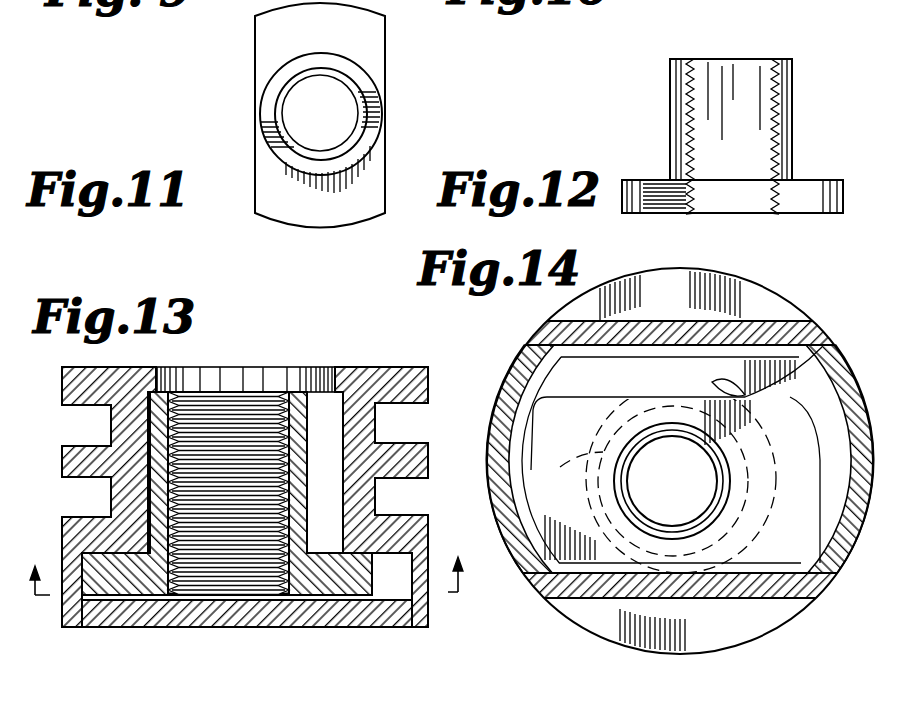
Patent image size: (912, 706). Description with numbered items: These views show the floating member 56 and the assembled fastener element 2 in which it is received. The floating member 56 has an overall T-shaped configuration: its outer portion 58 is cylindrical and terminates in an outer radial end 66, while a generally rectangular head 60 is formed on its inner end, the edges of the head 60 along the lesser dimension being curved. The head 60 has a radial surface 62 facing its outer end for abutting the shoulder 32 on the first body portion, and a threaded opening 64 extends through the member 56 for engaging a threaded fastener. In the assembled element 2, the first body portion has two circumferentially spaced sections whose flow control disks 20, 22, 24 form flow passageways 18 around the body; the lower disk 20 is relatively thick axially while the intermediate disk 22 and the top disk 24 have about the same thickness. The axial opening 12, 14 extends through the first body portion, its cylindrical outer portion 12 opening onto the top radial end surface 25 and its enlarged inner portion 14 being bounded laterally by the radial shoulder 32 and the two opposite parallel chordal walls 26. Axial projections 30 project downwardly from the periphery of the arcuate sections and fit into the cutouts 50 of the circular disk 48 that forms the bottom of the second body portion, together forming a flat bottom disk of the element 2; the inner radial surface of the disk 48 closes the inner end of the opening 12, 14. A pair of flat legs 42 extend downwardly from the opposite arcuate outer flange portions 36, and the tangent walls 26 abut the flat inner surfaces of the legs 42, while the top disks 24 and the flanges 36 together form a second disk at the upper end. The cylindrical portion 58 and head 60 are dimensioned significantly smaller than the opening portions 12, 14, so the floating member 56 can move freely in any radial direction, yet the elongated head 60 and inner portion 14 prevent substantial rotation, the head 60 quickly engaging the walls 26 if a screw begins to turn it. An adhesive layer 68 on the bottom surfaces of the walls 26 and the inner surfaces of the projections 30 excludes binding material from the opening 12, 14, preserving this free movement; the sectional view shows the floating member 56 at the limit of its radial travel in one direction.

In FIG. 13, the fastener element 2 is at (320, 342).
In FIG. 14, the fastener element 2 is at (774, 288).
In FIG. 13, the outer cylindrical portion of the axial opening 12 is at (322, 405).
In FIG. 14, the outer cylindrical portion of the axial opening 12 is at (820, 350).
In FIG. 13, the inner portion of the axial opening 14 is at (447, 547).
In FIG. 14, the inner portion of the axial opening 14 is at (830, 392).
In FIG. 13, the flow passageways 18 is at (395, 424).
In FIG. 13, the lower flow control disk 20 is at (62, 536).
In FIG. 13, the intermediate flow control disk 22 is at (428, 452).
In FIG. 13, the top flow control disk 24 is at (428, 370).
In FIG. 13, the top radial end surface 25 is at (125, 367).
In FIG. 14, the chordal walls 26 is at (592, 580).
In FIG. 13, the axial projections 30 is at (430, 612).
In FIG. 14, the axial projections 30 is at (512, 568).
In FIG. 13, the radial shoulder 32 is at (115, 556).
In FIG. 14, the radial shoulder 32 is at (610, 390).
In FIG. 14, the outer flange portions 36 is at (662, 292).
In FIG. 14, the flat legs 42 is at (765, 321).
In FIG. 13, the circular disk 48 is at (131, 630).
In FIG. 13, the circumferential cutout 50 is at (422, 622).
In FIG. 11, the floating member 56 is at (252, 91).
In FIG. 12, the floating member 56 is at (650, 79).
In FIG. 11, the outer cylindrical portion of the floating member 58 is at (265, 155).
In FIG. 12, the outer cylindrical portion of the floating member 58 is at (670, 104).
In FIG. 13, the outer cylindrical portion of the floating member 58 is at (288, 400).
In FIG. 14, the outer cylindrical portion of the floating member 58 is at (560, 546).
In FIG. 11, the head 60 is at (385, 45).
In FIG. 12, the head 60 is at (622, 192).
In FIG. 13, the head 60 is at (310, 580).
In FIG. 11, the radial surface of the head 62 is at (355, 45).
In FIG. 12, the radial surface of the head 62 is at (806, 180).
In FIG. 13, the radial surface of the head 62 is at (330, 550).
In FIG. 11, the threaded opening 64 is at (336, 132).
In FIG. 12, the threaded opening 64 is at (715, 60).
In FIG. 13, the threaded opening 64 is at (240, 395).
In FIG. 14, the threaded opening 64 is at (688, 500).
In FIG. 11, the outer radial end 66 is at (360, 86).
In FIG. 12, the outer radial end 66 is at (780, 60).
In FIG. 13, the outer radial end 66 is at (188, 372).
In FIG. 13, the adhesive layer 68 is at (85, 628).
In FIG. 14, the adhesive layer 68 is at (542, 520).